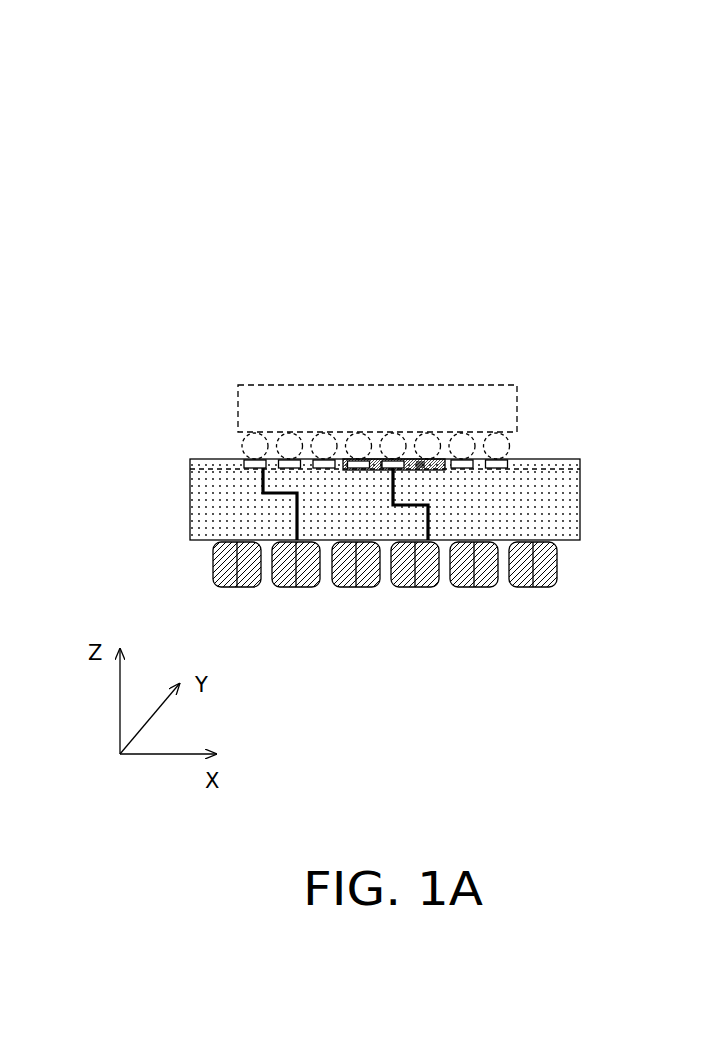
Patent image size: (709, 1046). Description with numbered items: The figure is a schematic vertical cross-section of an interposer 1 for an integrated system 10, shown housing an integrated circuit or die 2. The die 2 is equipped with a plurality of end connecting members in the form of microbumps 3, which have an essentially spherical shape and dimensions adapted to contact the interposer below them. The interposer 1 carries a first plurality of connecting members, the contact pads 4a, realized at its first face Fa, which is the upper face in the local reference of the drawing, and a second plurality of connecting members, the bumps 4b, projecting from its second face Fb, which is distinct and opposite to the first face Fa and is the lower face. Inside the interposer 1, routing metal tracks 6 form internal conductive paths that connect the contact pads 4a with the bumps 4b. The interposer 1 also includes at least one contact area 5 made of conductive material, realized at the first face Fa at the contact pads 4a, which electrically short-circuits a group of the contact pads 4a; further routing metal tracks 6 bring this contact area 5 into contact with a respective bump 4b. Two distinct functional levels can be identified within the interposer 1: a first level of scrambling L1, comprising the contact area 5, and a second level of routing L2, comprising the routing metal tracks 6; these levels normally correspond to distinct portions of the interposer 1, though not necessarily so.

The integrated system 10 is at (338, 197).
The interposer 1 is at (550, 490).
The integrated circuit or die 2 is at (355, 393).
The microbumps 3 is at (243, 445).
The contact pads 4a is at (288, 455).
The bumps 4b is at (213, 565).
The contact area 5 is at (418, 462).
The routing metal tracks 6 is at (428, 503).
The first face Fa is at (568, 459).
The second face Fb is at (569, 541).
The first level of scrambling L1 is at (202, 458).
The second level of routing L2 is at (202, 505).